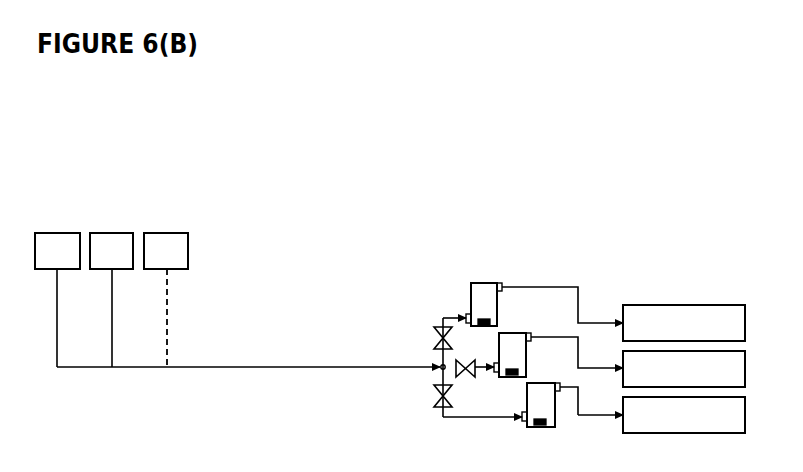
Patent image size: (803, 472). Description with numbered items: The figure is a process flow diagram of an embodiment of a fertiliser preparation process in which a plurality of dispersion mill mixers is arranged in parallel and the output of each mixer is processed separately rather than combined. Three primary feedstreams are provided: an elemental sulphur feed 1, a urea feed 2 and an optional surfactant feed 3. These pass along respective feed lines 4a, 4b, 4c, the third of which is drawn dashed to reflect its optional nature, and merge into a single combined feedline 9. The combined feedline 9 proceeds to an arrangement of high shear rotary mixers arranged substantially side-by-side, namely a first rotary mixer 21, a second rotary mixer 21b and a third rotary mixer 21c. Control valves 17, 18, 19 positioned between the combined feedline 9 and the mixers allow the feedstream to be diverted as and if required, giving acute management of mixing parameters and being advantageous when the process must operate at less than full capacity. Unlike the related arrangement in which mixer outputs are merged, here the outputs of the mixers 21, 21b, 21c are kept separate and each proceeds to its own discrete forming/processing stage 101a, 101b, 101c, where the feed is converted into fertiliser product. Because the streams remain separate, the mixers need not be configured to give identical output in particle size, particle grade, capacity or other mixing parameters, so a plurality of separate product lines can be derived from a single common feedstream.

The elemental sulphur feed 1 is at (57, 251).
The urea feed 2 is at (111, 251).
The surfactant feed 3 is at (166, 251).
The feed line 4a is at (70, 318).
The feed line 4b is at (132, 318).
The feed line 4c is at (193, 318).
The combined feedline 9 is at (248, 382).
The control valve 17 is at (510, 355).
The control valve 18 is at (579, 399).
The control valve 19 is at (501, 414).
The rotary mixer 21 is at (562, 308).
The rotary mixer 21b is at (595, 366).
The rotary mixer 21c is at (636, 437).
The forming/processing stage 101a is at (684, 323).
The forming/processing stage 101b is at (684, 369).
The forming/processing stage 101c is at (684, 415).